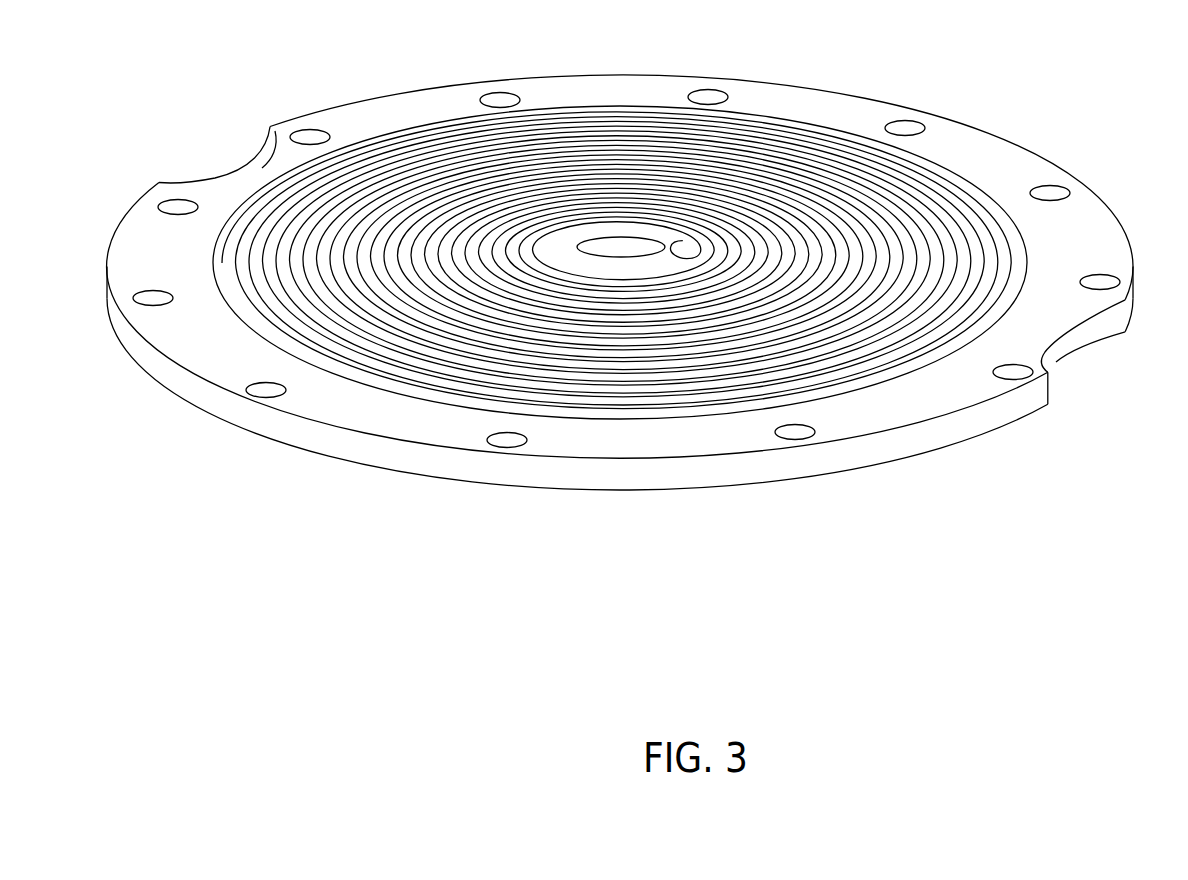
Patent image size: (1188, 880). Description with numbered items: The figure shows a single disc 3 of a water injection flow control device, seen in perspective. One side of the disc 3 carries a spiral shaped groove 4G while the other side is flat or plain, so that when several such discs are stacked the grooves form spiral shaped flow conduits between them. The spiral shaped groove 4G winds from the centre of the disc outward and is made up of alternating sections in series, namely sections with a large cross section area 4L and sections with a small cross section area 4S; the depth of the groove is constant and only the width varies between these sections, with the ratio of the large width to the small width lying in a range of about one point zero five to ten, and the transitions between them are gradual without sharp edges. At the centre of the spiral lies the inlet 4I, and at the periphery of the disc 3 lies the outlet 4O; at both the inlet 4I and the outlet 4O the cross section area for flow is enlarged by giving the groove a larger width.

The disc 3 is at (750, 102).
The inlet 4I is at (667, 150).
The spiral shaped groove 4G is at (616, 221).
The large cross section area section 4L is at (616, 260).
The small cross section area section 4S is at (810, 160).
The outlet 4O is at (1048, 317).